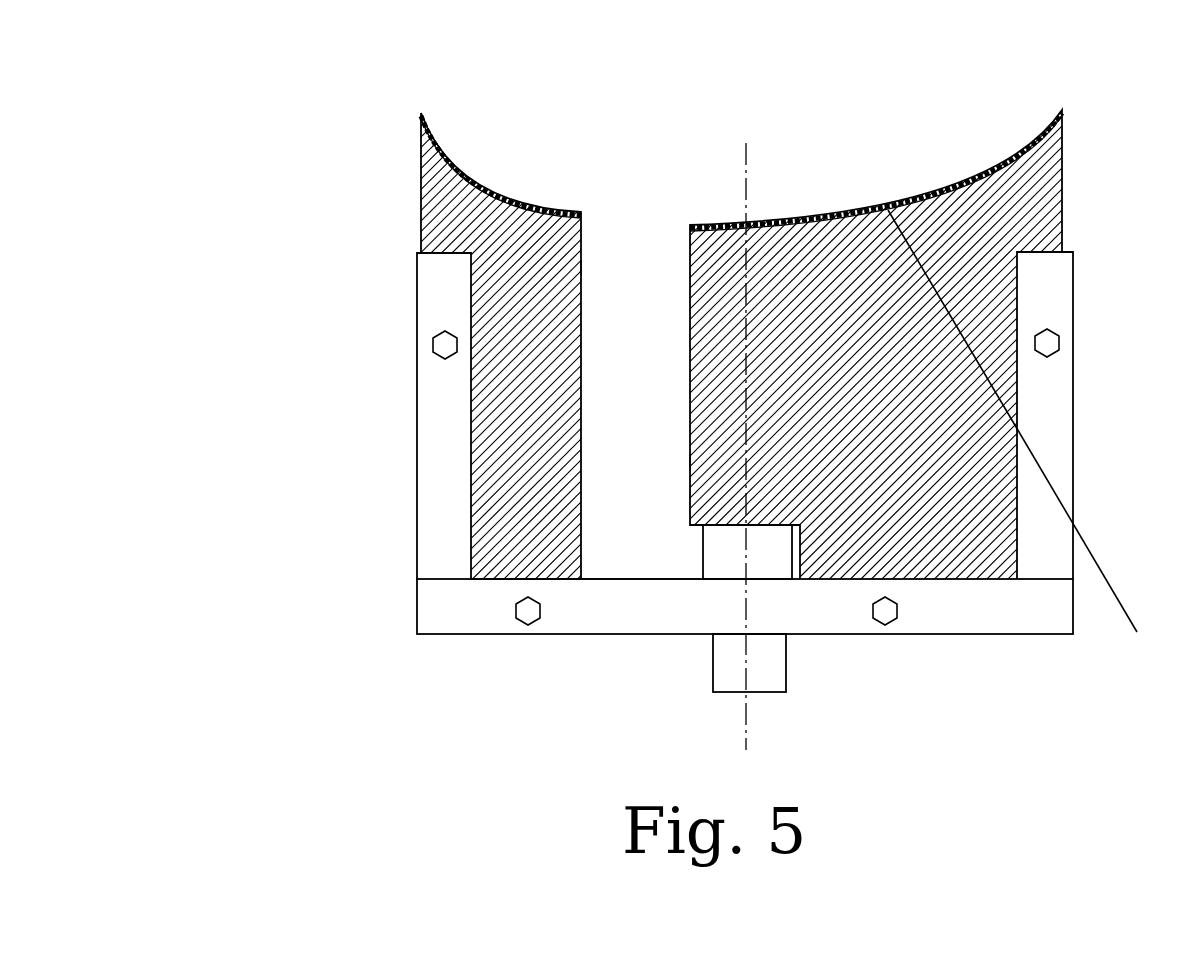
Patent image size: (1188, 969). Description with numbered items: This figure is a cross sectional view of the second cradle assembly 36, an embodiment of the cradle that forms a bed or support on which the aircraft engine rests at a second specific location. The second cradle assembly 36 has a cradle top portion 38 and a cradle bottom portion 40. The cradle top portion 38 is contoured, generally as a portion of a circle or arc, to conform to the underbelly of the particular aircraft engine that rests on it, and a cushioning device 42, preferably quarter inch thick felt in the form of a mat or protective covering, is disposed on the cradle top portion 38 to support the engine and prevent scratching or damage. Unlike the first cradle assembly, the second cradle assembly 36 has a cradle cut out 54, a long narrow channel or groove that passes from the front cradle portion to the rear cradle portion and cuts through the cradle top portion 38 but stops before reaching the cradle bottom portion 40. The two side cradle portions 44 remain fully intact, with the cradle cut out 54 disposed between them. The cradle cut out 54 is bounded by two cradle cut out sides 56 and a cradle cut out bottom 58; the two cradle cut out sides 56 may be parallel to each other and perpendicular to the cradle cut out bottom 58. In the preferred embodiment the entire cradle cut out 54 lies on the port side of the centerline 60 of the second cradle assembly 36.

The second cradle assembly 36 is at (367, 121).
The cradle top portion 38 is at (1026, 439).
The cradle bottom portion 40 is at (607, 637).
The cushioning device 42 is at (480, 165).
The side cradle portions 44 is at (417, 342).
The cradle cut out 54 is at (629, 308).
The cradle cut out sides 56 is at (581, 268).
The cradle cut out bottom 58 is at (620, 579).
The centerline 60 is at (748, 737).